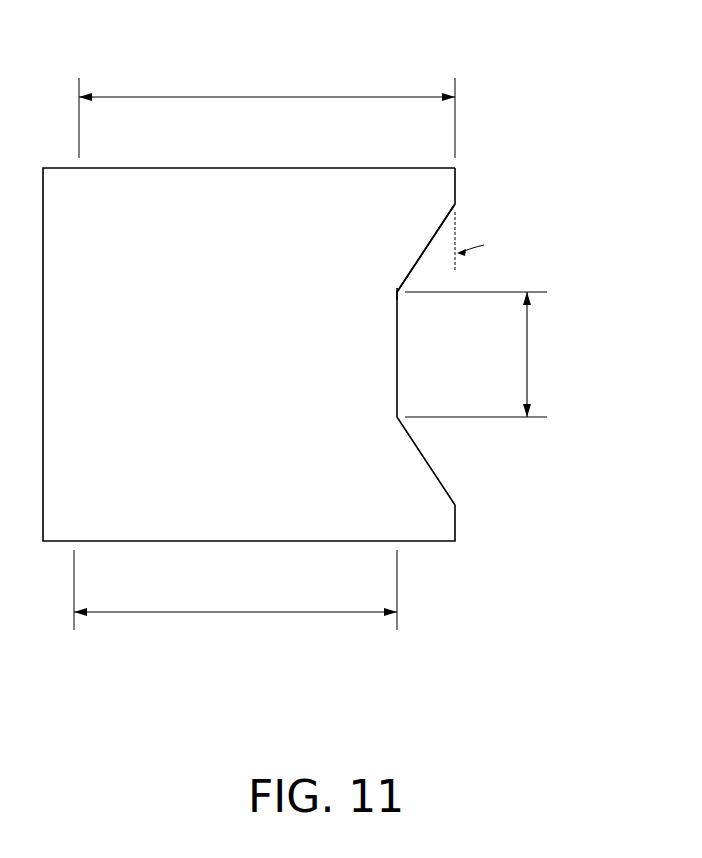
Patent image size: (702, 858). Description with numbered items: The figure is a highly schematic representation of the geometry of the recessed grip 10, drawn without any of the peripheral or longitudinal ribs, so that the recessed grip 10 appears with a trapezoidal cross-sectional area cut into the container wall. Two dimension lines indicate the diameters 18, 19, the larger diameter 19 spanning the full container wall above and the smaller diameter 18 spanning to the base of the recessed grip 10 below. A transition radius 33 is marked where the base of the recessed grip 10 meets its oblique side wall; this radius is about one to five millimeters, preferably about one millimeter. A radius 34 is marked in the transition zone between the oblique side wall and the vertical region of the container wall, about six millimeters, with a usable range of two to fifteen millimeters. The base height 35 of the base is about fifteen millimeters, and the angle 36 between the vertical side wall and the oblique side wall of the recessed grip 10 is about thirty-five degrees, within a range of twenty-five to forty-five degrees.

The recessed grip 10 is at (430, 390).
The diameter 18 is at (240, 614).
The diameter 19 is at (262, 97).
The transition radius 33 is at (394, 292).
The radius 34 is at (456, 204).
The base height 35 is at (528, 355).
The angle 36 is at (421, 241).